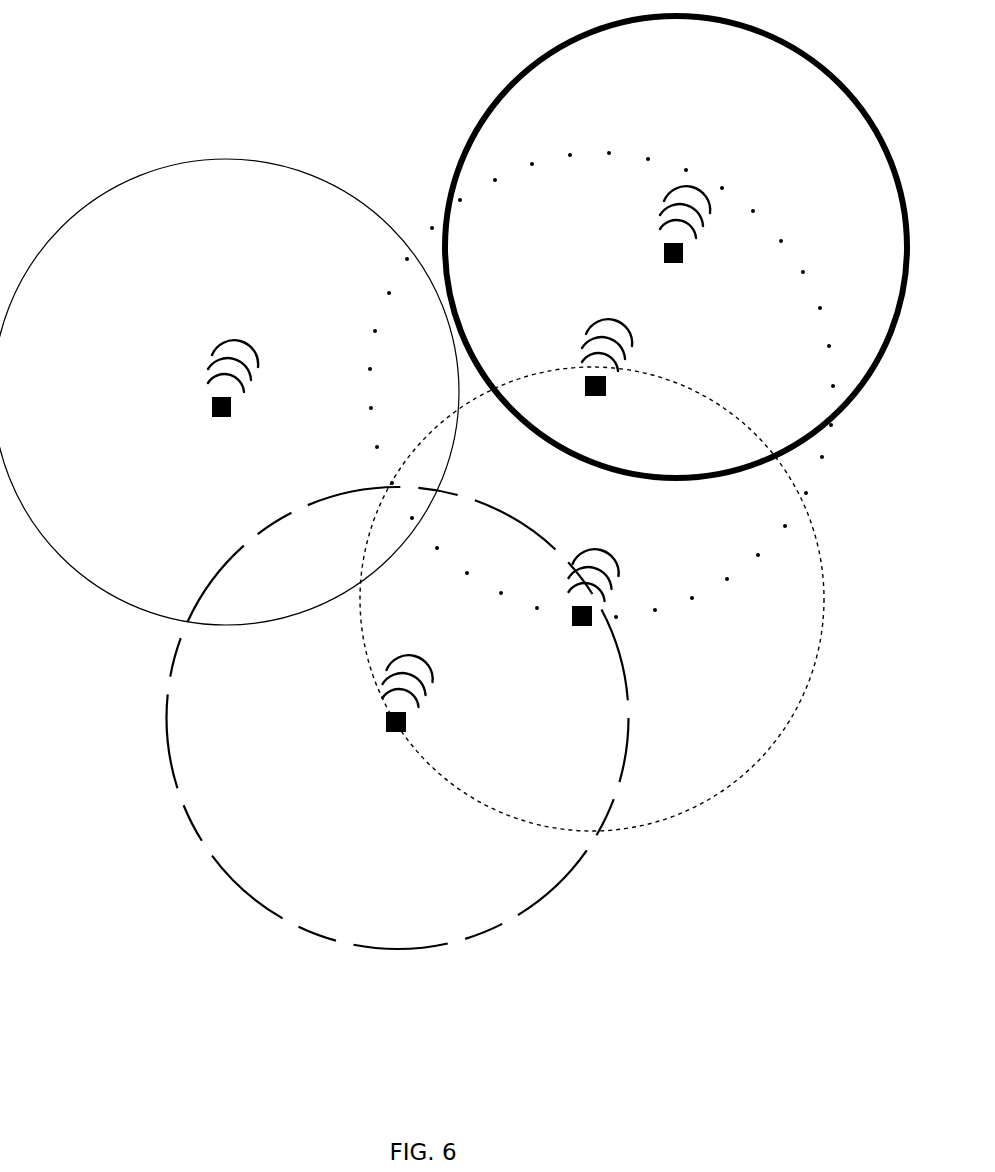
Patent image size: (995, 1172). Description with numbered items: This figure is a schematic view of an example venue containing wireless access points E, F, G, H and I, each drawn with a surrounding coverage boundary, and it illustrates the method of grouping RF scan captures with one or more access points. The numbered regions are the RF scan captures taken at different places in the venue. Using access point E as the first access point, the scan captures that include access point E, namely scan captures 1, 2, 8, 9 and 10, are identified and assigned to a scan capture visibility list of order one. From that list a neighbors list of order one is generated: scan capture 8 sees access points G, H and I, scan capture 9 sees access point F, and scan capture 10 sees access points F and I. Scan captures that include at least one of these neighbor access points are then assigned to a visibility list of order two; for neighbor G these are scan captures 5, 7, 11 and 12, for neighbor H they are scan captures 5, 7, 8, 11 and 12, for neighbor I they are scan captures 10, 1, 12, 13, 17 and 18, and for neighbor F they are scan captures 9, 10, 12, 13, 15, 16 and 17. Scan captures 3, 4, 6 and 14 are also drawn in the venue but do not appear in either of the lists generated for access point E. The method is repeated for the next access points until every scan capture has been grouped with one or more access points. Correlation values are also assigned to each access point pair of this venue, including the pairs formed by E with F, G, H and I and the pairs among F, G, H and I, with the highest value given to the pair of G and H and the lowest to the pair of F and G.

The RF scan capture 1 is at (101, 357).
The RF scan capture 2 is at (229, 392).
The region outside all coverage areas 3 is at (388, 106).
The coverage area of node G 4 is at (676, 247).
The RF scan capture 5 is at (544, 249).
The zone of node G coverage area 6 is at (737, 166).
The RF scan capture 7 is at (792, 362).
The RF scan capture 8 is at (601, 385).
The RF scan capture 9 is at (398, 718).
The RF scan capture 10 is at (390, 525).
The RF scan capture 11 is at (592, 599).
The RF scan capture 12 is at (499, 562).
The RF scan capture 13 is at (553, 705).
The zone outside node F coverage 14 is at (99, 750).
The RF scan capture 15 is at (290, 780).
The RF scan capture 16 is at (249, 842).
The RF scan capture 17 is at (526, 848).
The RF scan capture 18 is at (734, 705).
The access point E is at (213, 417).
The access point F is at (387, 732).
The access point G is at (664, 263).
The access point H is at (586, 396).
The access point I is at (573, 626).